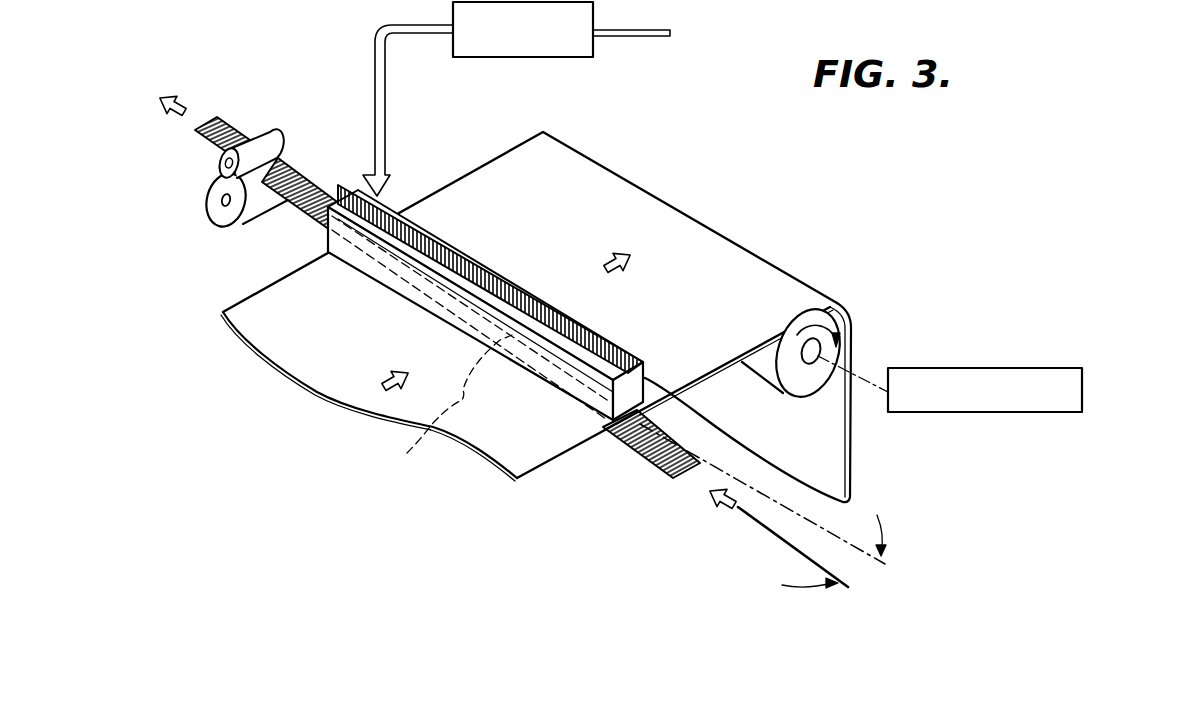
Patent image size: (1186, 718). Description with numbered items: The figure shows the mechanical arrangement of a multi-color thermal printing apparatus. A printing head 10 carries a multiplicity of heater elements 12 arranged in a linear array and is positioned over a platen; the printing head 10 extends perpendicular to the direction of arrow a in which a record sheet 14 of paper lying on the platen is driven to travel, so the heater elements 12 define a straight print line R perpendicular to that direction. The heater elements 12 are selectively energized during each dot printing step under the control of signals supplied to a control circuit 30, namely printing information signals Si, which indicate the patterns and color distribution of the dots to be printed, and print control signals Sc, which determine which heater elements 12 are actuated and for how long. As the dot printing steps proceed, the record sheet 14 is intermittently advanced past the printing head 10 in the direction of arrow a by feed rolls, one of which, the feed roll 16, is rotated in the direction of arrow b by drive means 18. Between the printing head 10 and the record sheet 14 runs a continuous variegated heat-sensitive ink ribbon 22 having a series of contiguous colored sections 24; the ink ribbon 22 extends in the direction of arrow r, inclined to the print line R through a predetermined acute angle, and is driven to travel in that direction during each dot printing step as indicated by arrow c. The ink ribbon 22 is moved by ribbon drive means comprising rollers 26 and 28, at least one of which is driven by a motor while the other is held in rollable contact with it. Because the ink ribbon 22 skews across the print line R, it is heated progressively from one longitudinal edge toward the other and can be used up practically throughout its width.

The printing head 10 is at (624, 339).
The heater elements 12 is at (446, 241).
The record sheet 14 is at (272, 290).
The feed roll 16 is at (800, 394).
The drive means 18 is at (972, 414).
The ink ribbon 22 is at (640, 440).
The colored sections 24 is at (658, 468).
The roller 26 is at (215, 217).
The roller 28 is at (262, 135).
The control circuit 30 is at (556, 58).
The print line R is at (449, 409).
The direction of ink ribbon travel r is at (762, 528).
The direction of record sheet travel a is at (603, 252).
The direction of feed roll rotation b is at (838, 312).
The direction of ink ribbon travel during printing c is at (184, 103).
The printing information signals Si is at (357, 68).
The print control signals Sc is at (400, 68).